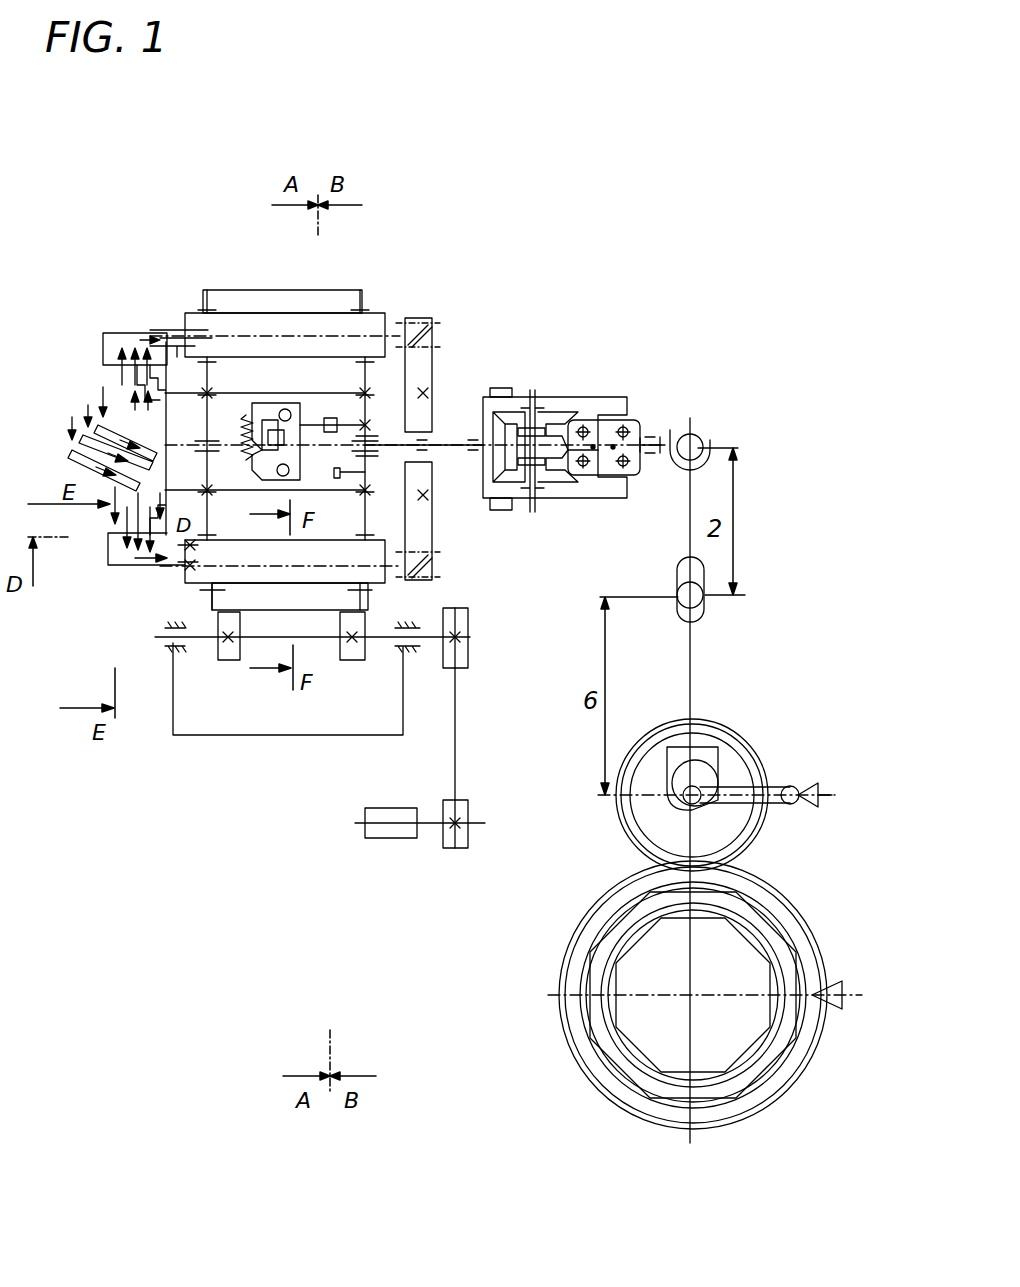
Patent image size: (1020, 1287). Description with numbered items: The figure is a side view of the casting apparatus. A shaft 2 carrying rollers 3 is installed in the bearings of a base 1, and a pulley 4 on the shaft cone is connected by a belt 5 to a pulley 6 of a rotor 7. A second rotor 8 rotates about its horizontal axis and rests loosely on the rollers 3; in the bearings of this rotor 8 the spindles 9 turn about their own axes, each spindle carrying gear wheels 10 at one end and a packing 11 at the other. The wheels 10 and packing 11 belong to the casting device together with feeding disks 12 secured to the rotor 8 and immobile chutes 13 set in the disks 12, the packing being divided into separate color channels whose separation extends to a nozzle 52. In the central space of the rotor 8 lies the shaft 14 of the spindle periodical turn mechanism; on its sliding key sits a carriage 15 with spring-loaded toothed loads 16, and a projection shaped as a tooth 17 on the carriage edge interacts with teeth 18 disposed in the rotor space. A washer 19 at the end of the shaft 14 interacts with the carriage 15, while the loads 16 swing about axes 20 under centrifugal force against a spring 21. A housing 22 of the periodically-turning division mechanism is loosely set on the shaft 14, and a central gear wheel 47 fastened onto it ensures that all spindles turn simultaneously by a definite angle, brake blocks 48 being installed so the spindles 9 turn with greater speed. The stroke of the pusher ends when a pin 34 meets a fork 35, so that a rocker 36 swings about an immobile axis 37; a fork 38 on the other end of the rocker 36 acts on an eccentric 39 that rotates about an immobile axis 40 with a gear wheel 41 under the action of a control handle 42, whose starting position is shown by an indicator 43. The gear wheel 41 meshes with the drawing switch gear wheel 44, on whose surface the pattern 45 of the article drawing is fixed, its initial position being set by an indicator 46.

The base 1 is at (190, 742).
The shaft 2 is at (241, 660).
The rollers 3 is at (350, 660).
The pulley 4 is at (450, 660).
The belt 5 is at (460, 752).
The pulley 6 is at (462, 848).
The rotor 7 is at (392, 836).
The rotor 8 is at (215, 310).
The spindles 9 is at (233, 325).
The gear wheels 10 is at (433, 560).
The packing 11 is at (165, 335).
The feeding disks 12 is at (124, 345).
The immobile chutes 13 is at (84, 400).
The shaft of spindle periodical turn mechanism 14 is at (432, 408).
The carriage 15 is at (332, 418).
The spring-loaded toothed plummets (loads) 16 is at (278, 403).
The carriage tooth 17 is at (366, 438).
The teeth 18 is at (420, 400).
The washer 19 is at (262, 440).
The axes 20 is at (177, 553).
The spring 21 is at (253, 415).
The housing of periodically-turning division mechanism 22 is at (545, 505).
The pin 34 is at (708, 432).
The fork 35 is at (707, 450).
The rocker 36 is at (697, 640).
The immobile axis 37 is at (700, 593).
The fork 38 is at (712, 745).
The eccentric 39 is at (707, 770).
The immobile axis 40 is at (688, 798).
The gear wheel 41 is at (759, 833).
The control handle 42 is at (735, 790).
The indicator 43 is at (820, 792).
The gear wheel 44 is at (740, 869).
The pattern 45 is at (797, 1078).
The indicator 46 is at (842, 1009).
The central gear wheel 47 is at (470, 413).
The brake blocks 48 is at (505, 512).
The nozzle 52 is at (262, 458).